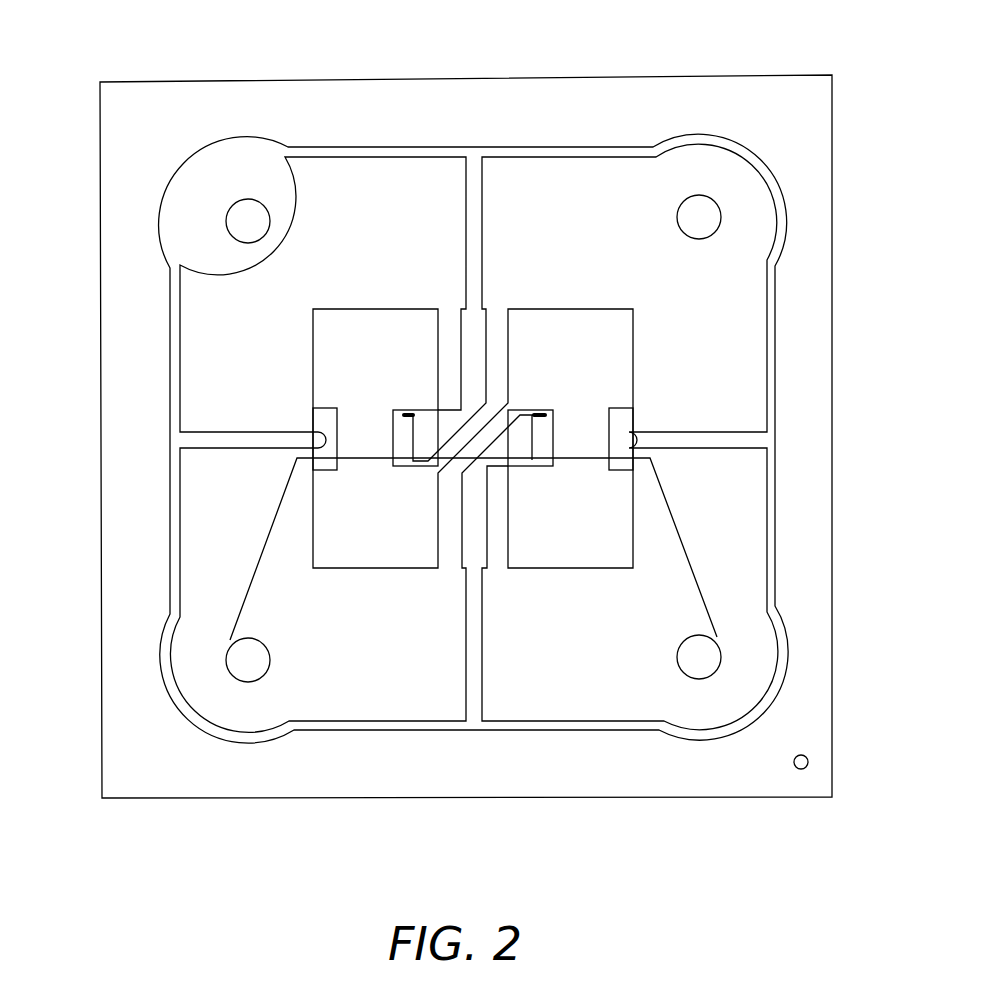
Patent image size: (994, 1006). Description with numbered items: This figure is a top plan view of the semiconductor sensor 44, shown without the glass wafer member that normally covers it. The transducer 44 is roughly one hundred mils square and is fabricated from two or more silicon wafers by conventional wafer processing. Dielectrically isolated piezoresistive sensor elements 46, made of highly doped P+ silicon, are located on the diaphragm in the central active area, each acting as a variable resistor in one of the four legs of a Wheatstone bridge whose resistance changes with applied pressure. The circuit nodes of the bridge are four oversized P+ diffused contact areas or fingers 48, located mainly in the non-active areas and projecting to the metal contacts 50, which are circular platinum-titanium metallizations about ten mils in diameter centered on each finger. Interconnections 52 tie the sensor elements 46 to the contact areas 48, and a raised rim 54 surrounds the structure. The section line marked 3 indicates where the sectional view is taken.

The circuit board substrate 44 is at (96, 461).
The feed terminals 46 is at (410, 470).
The conductive patch elements 48 is at (373, 176).
The mounting holes 50 is at (246, 199).
The circuit components 52 is at (438, 374).
The ground plane 54 is at (433, 775).
The section line 3- 3 is at (230, 640).